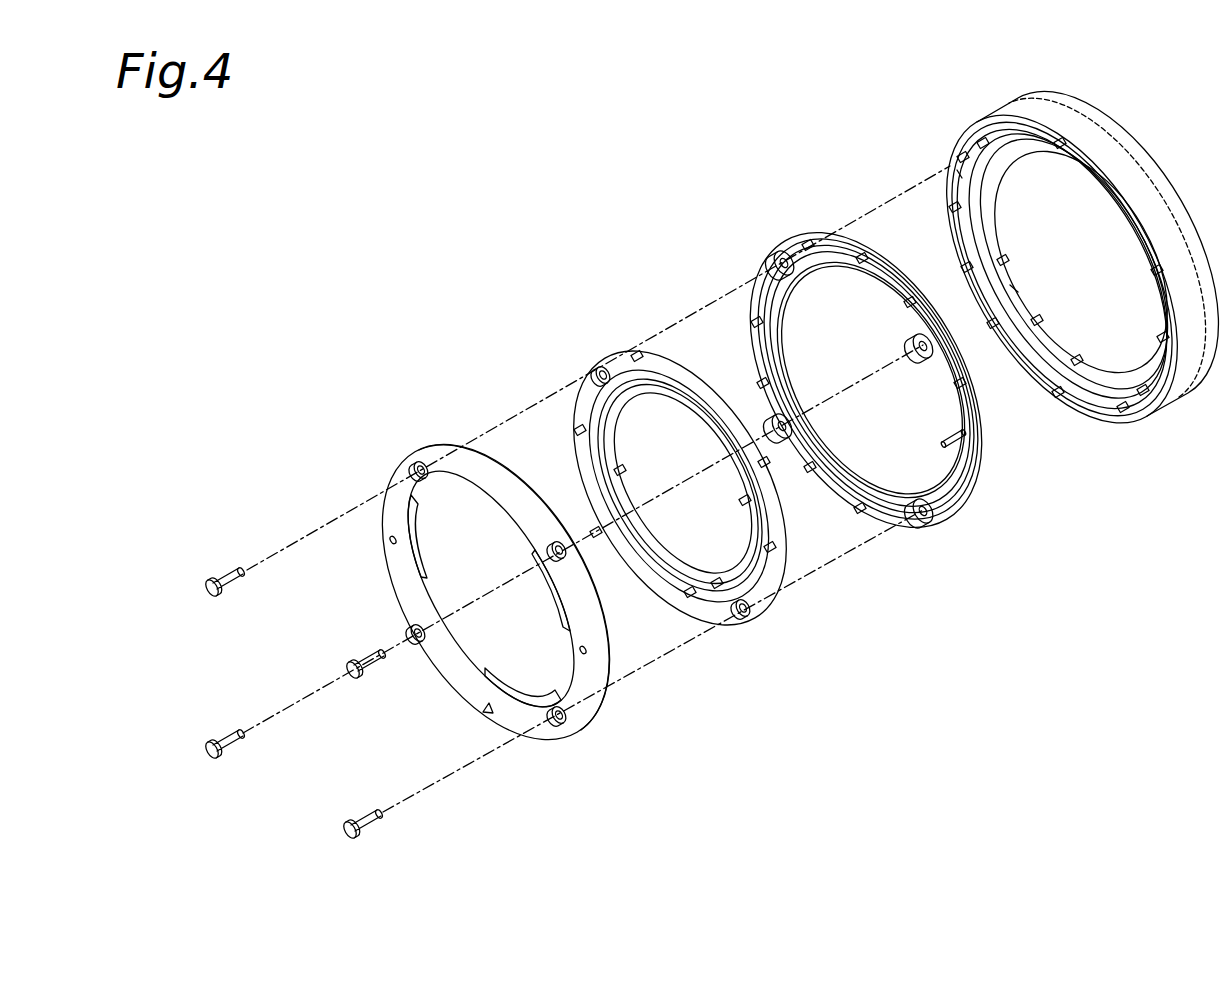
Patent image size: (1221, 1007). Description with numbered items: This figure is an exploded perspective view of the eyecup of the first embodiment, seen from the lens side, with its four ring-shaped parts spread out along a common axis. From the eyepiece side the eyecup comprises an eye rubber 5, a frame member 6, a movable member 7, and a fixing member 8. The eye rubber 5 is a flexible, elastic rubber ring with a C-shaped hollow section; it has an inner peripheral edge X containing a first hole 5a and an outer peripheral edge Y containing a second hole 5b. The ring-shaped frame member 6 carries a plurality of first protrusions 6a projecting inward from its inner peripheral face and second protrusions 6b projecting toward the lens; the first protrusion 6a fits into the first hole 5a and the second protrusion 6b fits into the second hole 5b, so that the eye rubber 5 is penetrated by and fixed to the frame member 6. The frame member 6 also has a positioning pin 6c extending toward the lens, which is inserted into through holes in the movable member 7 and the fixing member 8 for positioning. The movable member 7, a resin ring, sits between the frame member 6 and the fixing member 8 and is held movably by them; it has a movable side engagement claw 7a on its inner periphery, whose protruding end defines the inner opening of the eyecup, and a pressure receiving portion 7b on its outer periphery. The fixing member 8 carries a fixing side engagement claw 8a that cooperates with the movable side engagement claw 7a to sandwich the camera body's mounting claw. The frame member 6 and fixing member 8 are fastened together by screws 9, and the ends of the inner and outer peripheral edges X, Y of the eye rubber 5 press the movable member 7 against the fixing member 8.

The eye rubber 5 is at (1183, 396).
The first hole 5a is at (1038, 320).
The second hole 5b is at (1056, 393).
The frame member 6 is at (953, 514).
The first protrusion 6a is at (828, 446).
The second protrusion 6b is at (857, 509).
The positioning pin 6c is at (946, 443).
The movable member 7 is at (757, 612).
The movable side engagement claw 7a is at (714, 584).
The pressure receiving portion 7b is at (645, 358).
The fixing member 8 is at (590, 716).
The fixing side engagement claw 8a is at (421, 547).
The screw 9 is at (238, 576).
The inner peripheral edge X is at (1012, 286).
The outer peripheral edge Y is at (957, 173).